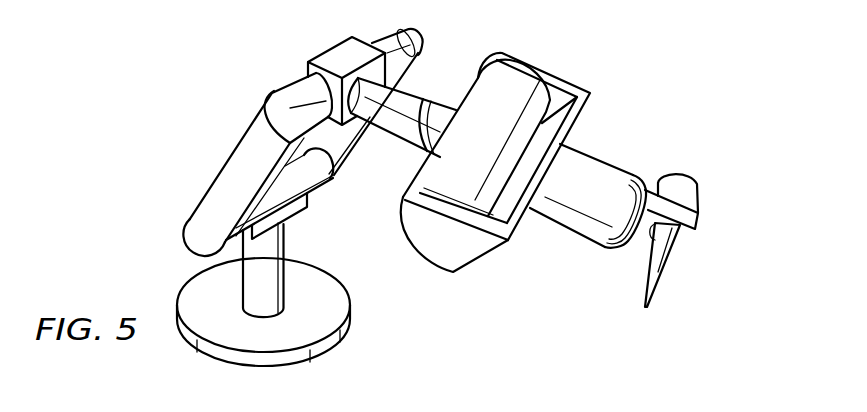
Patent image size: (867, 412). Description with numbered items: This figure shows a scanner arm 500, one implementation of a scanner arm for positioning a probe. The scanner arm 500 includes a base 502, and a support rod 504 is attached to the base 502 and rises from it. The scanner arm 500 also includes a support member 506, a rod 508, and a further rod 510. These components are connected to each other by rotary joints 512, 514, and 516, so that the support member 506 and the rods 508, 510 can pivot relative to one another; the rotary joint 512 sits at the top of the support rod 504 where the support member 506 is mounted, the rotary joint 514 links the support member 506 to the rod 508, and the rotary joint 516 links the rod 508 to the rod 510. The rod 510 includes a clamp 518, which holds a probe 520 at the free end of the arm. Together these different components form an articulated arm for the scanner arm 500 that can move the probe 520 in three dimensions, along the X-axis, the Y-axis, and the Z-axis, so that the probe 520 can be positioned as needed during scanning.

The scanner arm 500 is at (163, 72).
The base 502 is at (352, 313).
The support rod 504 is at (283, 237).
The support member 506 is at (226, 156).
The rod 508 is at (423, 100).
The rod 510 is at (560, 230).
The rotary joint 512 is at (310, 198).
The rotary joint 514 is at (332, 47).
The rotary joint 516 is at (560, 42).
The clamp 518 is at (698, 235).
The probe 520 is at (690, 175).